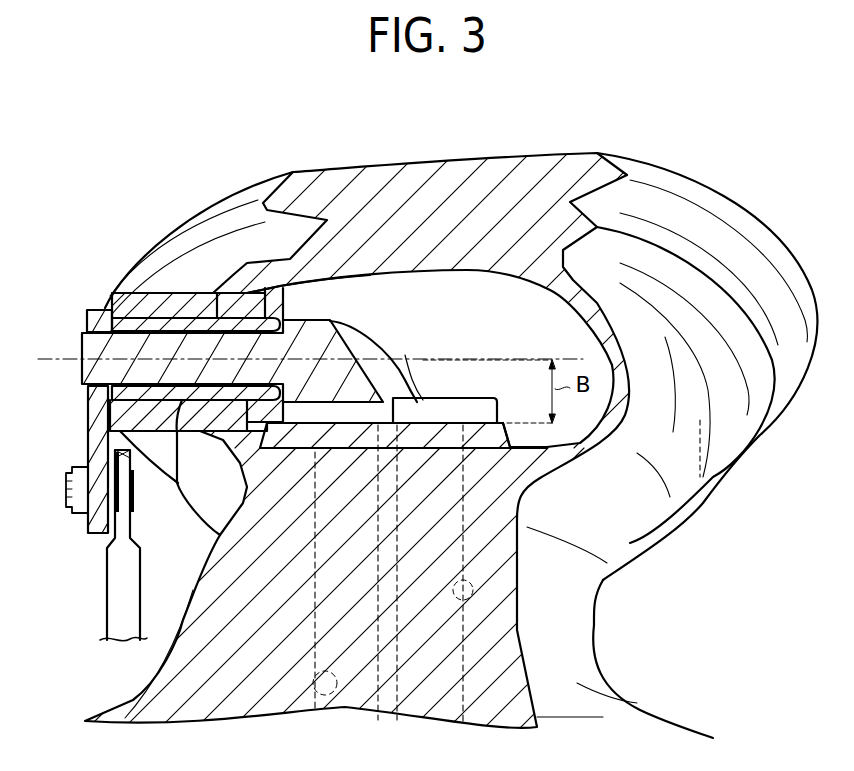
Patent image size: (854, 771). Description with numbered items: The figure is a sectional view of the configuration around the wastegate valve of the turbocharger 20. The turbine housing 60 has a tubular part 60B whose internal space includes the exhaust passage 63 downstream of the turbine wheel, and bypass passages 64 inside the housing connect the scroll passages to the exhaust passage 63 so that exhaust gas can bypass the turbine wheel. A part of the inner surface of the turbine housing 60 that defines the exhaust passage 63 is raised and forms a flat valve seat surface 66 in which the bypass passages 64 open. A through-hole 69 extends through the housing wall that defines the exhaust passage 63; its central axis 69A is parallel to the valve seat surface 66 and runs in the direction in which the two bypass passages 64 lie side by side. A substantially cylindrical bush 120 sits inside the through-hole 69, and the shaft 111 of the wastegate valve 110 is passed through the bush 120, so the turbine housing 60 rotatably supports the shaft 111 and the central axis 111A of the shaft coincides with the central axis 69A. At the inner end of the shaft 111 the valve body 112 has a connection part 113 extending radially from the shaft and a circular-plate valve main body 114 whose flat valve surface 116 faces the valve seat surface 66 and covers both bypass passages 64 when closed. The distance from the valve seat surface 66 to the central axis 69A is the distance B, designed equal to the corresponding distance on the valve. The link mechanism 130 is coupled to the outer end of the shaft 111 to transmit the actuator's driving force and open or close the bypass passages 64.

The turbocharger 20 is at (750, 173).
The turbine housing 60 is at (763, 212).
The tubular part 60B is at (598, 612).
The exhaust passage 63 is at (583, 360).
The bypass passage 64 is at (331, 694).
The valve seat surface 66 is at (348, 417).
The through-hole 69 is at (160, 328).
The central axis of the through-hole 69A is at (48, 355).
The wastegate valve 110 is at (313, 320).
The shaft 111 is at (182, 400).
The central axis of the shaft 111A is at (293, 330).
The valve body 112 is at (372, 328).
The connection part 113 is at (390, 341).
The valve main body 114 is at (457, 397).
The valve surface 116 is at (428, 430).
The bush 120 is at (118, 292).
The link mechanism 130 is at (103, 606).